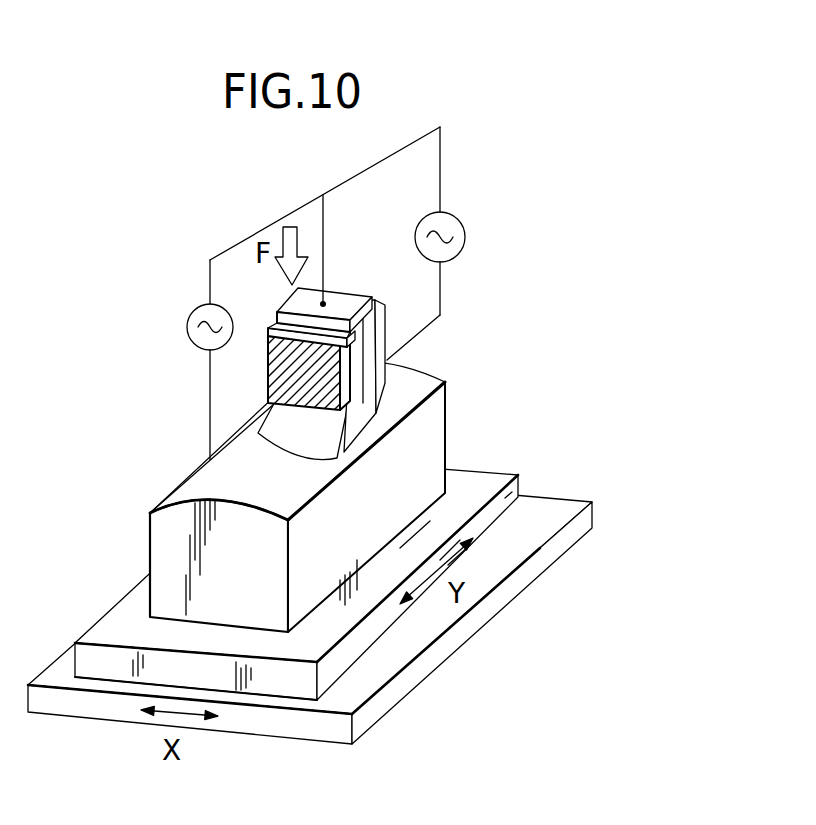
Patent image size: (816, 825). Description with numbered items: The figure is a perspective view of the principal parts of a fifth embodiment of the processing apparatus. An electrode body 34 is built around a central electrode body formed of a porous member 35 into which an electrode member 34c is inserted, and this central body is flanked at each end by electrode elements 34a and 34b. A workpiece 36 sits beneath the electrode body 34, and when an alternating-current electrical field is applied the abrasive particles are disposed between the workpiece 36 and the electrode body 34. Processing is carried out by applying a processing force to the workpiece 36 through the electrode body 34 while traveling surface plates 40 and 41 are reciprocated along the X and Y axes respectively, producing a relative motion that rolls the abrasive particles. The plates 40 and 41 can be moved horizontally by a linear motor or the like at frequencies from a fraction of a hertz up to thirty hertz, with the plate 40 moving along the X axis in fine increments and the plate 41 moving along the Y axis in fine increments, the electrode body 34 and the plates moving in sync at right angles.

The electrode body 34 is at (315, 323).
The electrode element 34a is at (387, 362).
The electrode element 34b is at (300, 371).
The electrode member 34c is at (323, 304).
The porous member 35 is at (362, 427).
The workpiece 36 is at (435, 450).
The traveling surface plate 40 is at (540, 553).
The traveling surface plate 41 is at (520, 505).